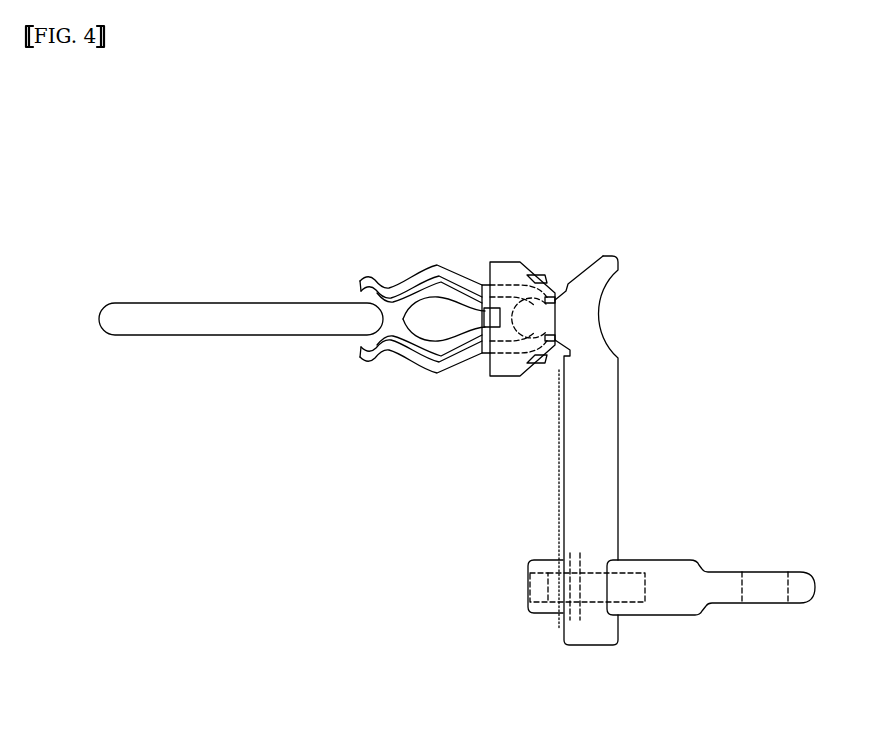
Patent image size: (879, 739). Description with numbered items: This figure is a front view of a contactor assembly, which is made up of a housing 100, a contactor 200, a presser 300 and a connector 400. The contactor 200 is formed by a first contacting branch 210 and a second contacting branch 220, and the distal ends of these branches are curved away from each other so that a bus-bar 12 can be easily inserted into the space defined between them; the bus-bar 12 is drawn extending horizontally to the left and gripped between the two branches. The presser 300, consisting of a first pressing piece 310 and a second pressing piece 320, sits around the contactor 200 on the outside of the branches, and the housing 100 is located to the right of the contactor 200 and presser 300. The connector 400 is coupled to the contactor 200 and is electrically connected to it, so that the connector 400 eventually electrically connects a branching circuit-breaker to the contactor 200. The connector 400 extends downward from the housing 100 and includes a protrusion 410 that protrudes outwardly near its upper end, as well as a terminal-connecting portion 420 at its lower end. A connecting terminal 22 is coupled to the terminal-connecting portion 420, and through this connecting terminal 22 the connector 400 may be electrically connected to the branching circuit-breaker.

The bus-bar 12 is at (133, 320).
The connecting terminal 22 is at (720, 580).
The housing 100 is at (512, 262).
The contactor 200 is at (401, 397).
The first contacting branch 210 is at (403, 302).
The second contacting branch 220 is at (363, 355).
The presser 300 is at (422, 217).
The first pressing piece 310 is at (425, 268).
The second pressing piece 320 is at (459, 277).
The connector 400 is at (605, 416).
The protrusion 410 is at (540, 318).
The terminal-connecting portion 420 is at (627, 587).